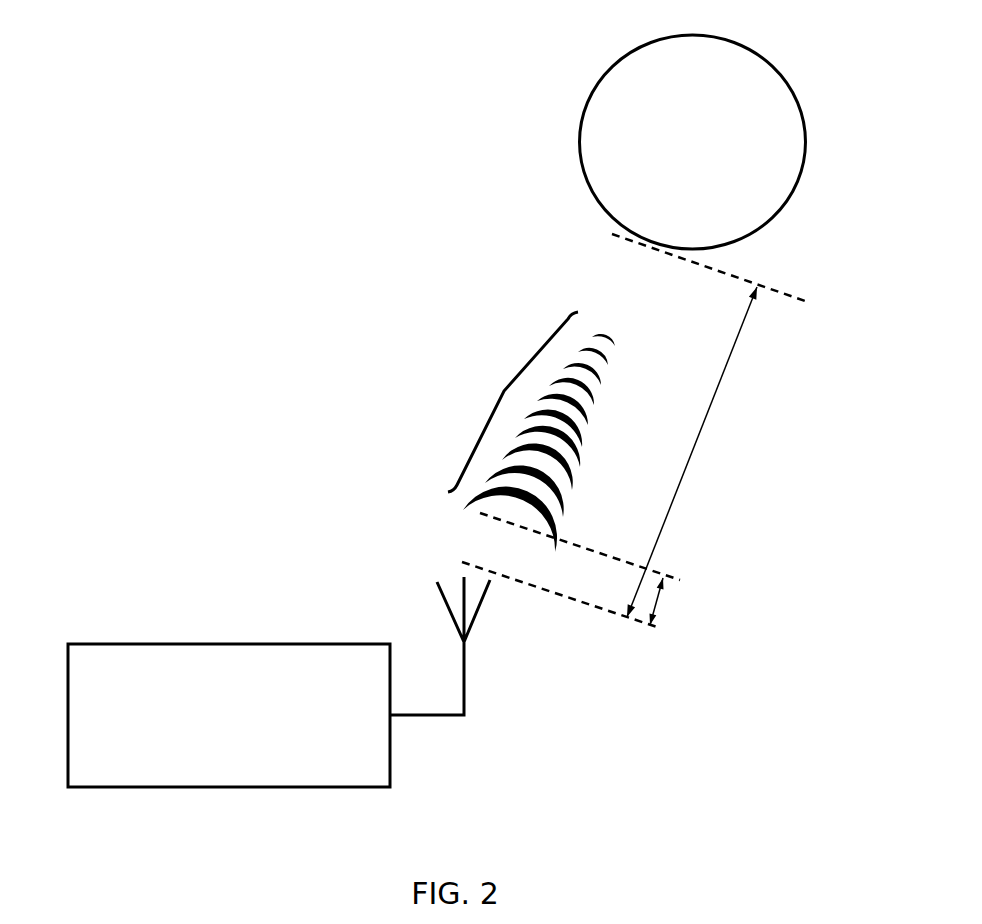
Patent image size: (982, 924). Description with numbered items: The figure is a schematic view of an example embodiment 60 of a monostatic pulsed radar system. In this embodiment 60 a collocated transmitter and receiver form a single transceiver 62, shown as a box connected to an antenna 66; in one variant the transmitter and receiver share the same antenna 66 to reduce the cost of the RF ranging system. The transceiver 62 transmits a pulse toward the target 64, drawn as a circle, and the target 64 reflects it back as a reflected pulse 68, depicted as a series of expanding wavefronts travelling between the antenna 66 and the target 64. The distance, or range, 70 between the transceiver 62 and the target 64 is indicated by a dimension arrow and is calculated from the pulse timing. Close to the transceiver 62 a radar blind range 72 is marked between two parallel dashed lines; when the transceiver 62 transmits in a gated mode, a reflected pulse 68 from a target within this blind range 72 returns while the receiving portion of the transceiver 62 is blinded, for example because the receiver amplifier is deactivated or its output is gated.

The example embodiment 60 is at (352, 278).
The transceiver 62 is at (104, 677).
The target 64 is at (705, 73).
The antenna 66 is at (466, 627).
The reflected pulse 68 is at (503, 391).
The distance 70 is at (698, 433).
The radar blind range 72 is at (655, 597).